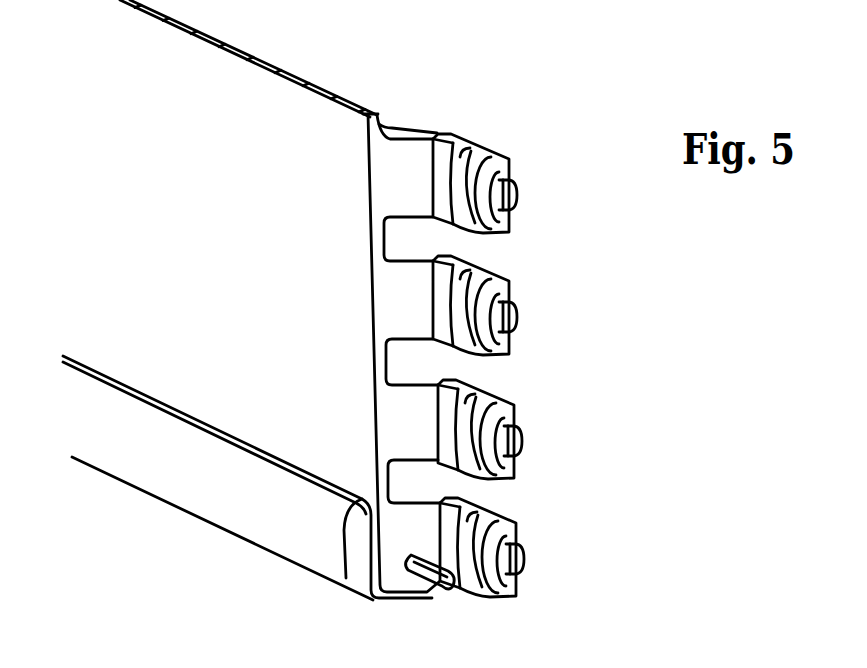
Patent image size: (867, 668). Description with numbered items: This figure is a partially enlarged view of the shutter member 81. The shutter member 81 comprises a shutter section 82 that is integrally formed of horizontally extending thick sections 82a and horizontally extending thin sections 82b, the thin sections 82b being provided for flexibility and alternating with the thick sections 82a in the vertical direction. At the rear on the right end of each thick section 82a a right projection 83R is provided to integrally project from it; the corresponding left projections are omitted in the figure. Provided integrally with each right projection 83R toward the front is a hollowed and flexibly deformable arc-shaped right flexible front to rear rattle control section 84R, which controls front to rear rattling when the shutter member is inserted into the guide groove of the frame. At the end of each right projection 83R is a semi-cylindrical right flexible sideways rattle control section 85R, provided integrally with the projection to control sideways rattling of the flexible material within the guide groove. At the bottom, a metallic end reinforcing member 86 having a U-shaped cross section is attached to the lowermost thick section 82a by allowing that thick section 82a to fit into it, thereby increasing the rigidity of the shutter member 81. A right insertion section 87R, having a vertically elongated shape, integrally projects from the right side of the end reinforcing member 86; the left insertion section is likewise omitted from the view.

The shutter member 81 is at (253, 553).
The shutter section 82 is at (220, 402).
The thick section 82a is at (402, 165).
The thin section 82b is at (385, 243).
The right projection 83R is at (456, 140).
The right flexible front to rear rattle control section 84R is at (508, 153).
The right flexible sideways rattle control section 85R is at (517, 196).
The end reinforcing member 86 is at (133, 472).
The right insertion section 87R is at (440, 586).